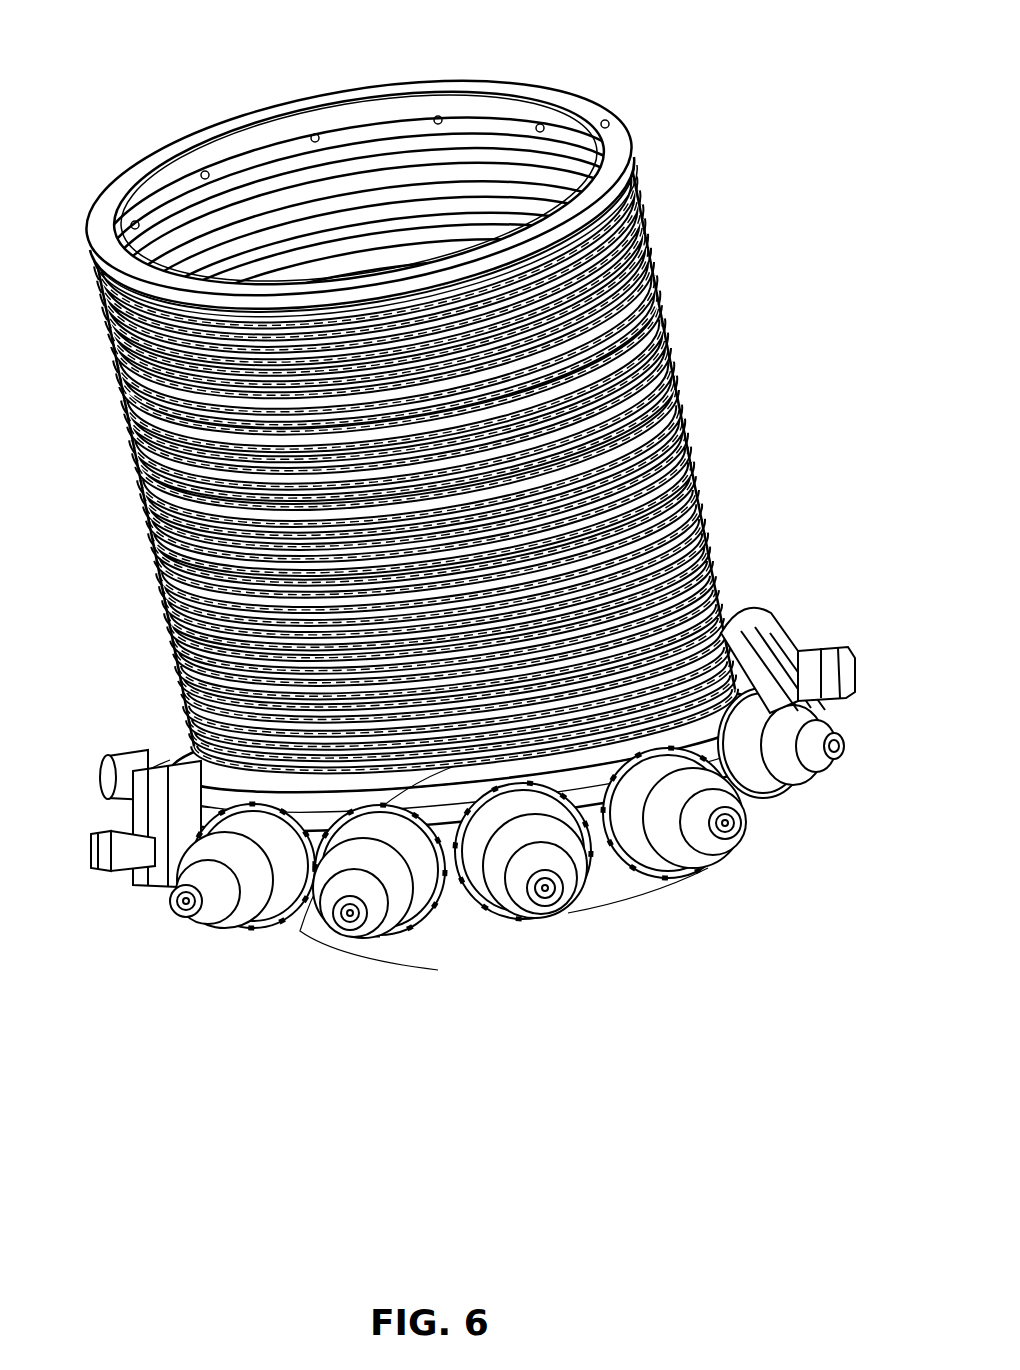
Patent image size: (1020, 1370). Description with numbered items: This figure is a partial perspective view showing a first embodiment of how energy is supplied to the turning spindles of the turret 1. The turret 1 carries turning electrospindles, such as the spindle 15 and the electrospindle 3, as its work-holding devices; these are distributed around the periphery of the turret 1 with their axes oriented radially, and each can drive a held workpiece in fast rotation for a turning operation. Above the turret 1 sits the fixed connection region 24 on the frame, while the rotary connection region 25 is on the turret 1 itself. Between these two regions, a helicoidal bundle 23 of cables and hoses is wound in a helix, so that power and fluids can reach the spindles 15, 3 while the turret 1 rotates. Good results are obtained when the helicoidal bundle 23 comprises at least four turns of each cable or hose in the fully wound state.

The turret 1 is at (590, 904).
The electrospindle 3 is at (748, 592).
The spindle 15 is at (490, 884).
The helicoidal bundle 23 is at (625, 357).
The fixed connection region 24 is at (585, 98).
The rotary connection region 25 is at (440, 745).